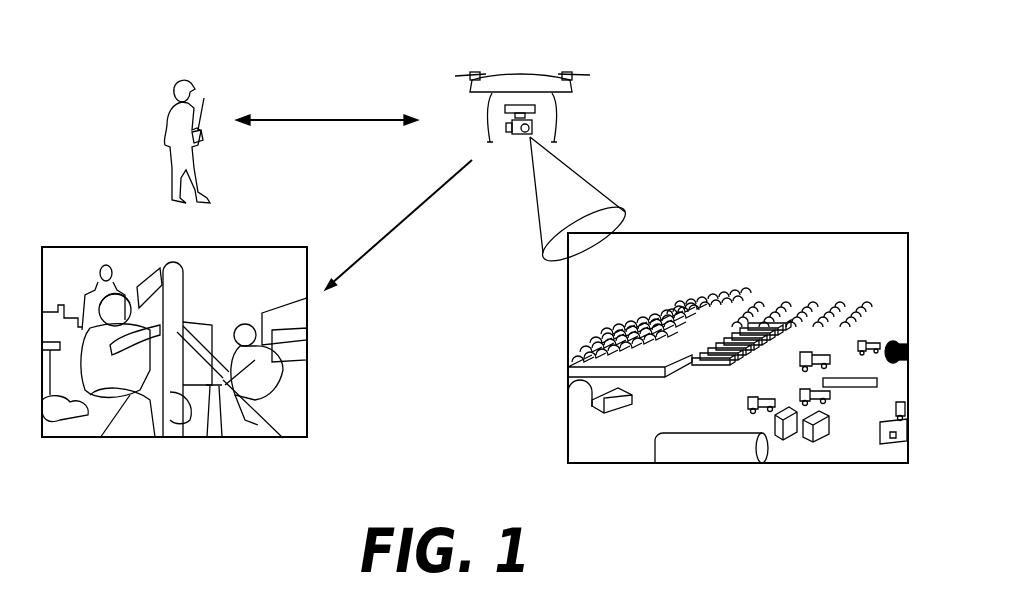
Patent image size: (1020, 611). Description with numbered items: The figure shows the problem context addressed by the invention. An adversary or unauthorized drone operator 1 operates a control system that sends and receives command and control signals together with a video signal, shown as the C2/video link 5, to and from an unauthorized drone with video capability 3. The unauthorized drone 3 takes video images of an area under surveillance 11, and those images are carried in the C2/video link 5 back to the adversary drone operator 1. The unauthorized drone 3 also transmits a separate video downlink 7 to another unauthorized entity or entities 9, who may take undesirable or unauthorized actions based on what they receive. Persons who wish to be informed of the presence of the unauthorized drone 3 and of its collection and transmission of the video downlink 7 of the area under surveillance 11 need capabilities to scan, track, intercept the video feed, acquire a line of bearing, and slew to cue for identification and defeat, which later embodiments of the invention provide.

The adversary drone operator 1 is at (101, 106).
The unauthorized drone with video capability 3 is at (616, 106).
The C2/video signal 5 is at (322, 192).
The video downlink 7 is at (427, 321).
The unauthorized entities 9 is at (164, 529).
The area under surveillance 11 is at (752, 499).